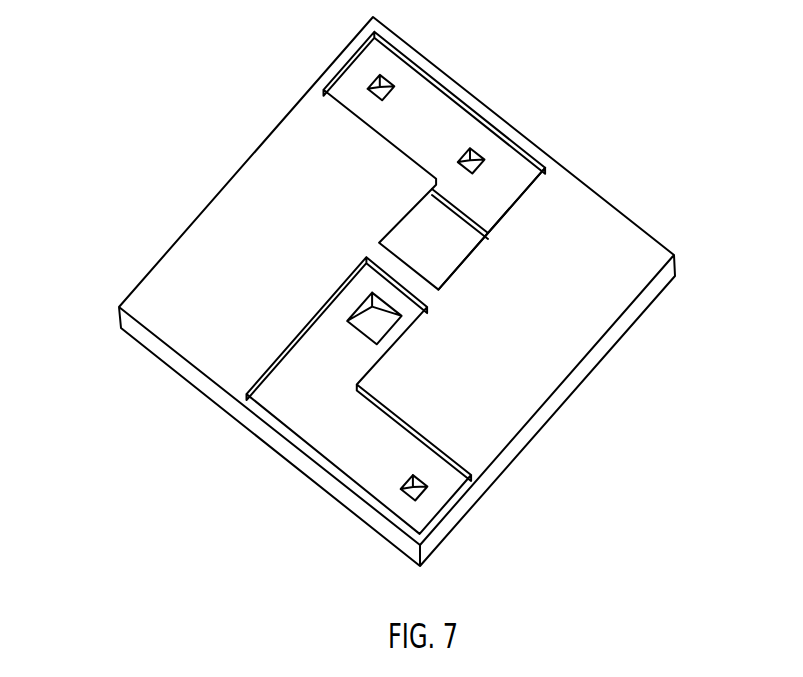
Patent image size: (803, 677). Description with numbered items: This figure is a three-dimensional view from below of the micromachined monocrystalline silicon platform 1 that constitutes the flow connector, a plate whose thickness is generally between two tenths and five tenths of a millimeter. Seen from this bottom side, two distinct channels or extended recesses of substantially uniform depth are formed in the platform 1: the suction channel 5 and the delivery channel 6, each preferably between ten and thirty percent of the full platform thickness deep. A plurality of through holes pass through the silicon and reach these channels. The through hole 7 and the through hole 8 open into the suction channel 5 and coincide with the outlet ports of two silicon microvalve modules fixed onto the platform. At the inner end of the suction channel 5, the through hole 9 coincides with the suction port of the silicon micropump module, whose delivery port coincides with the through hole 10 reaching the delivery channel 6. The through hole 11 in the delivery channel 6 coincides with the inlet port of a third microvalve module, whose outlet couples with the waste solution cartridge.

The monocrystalline silicon platform 1 is at (660, 295).
The suction channel 5 is at (417, 97).
The delivery channel 6 is at (343, 460).
The through hole 7 is at (372, 83).
The through hole 8 is at (474, 156).
The through hole 9 is at (457, 272).
The through hole 10 is at (348, 323).
The through hole 11 is at (420, 492).